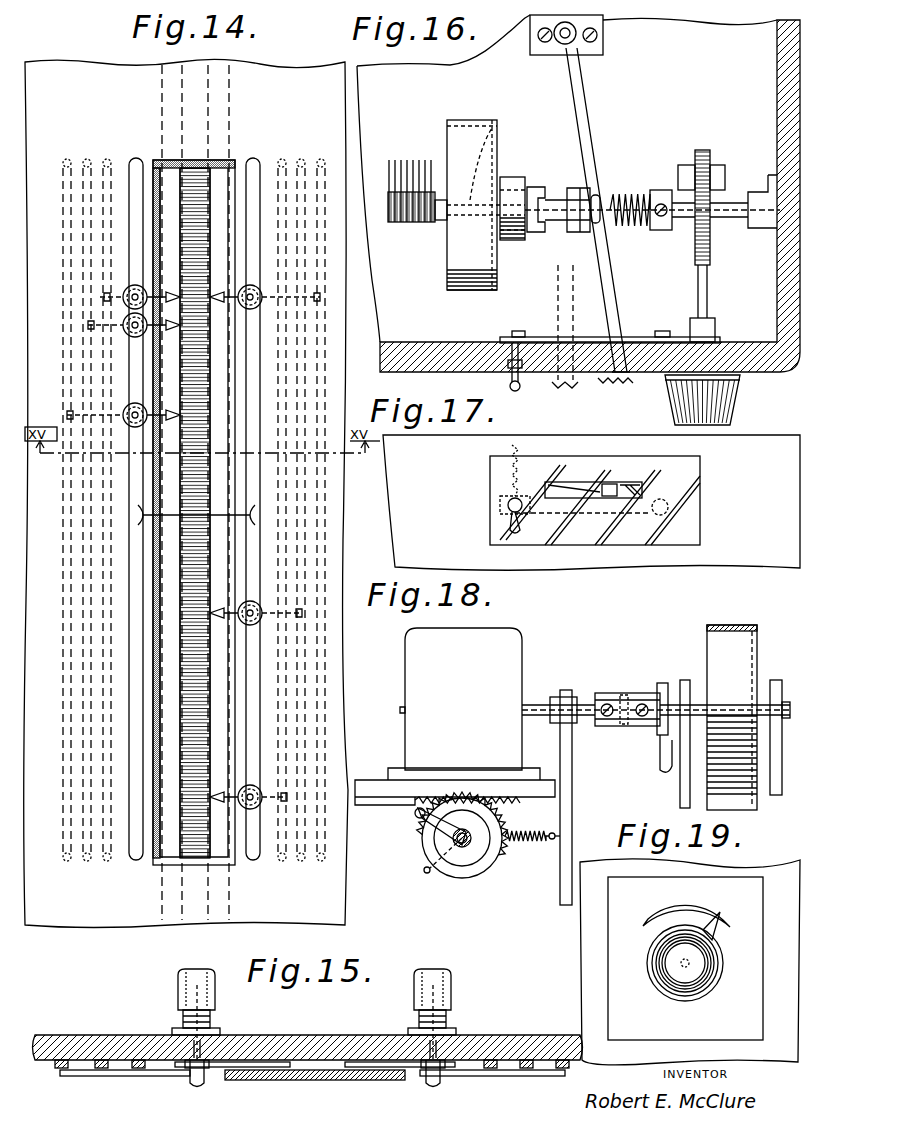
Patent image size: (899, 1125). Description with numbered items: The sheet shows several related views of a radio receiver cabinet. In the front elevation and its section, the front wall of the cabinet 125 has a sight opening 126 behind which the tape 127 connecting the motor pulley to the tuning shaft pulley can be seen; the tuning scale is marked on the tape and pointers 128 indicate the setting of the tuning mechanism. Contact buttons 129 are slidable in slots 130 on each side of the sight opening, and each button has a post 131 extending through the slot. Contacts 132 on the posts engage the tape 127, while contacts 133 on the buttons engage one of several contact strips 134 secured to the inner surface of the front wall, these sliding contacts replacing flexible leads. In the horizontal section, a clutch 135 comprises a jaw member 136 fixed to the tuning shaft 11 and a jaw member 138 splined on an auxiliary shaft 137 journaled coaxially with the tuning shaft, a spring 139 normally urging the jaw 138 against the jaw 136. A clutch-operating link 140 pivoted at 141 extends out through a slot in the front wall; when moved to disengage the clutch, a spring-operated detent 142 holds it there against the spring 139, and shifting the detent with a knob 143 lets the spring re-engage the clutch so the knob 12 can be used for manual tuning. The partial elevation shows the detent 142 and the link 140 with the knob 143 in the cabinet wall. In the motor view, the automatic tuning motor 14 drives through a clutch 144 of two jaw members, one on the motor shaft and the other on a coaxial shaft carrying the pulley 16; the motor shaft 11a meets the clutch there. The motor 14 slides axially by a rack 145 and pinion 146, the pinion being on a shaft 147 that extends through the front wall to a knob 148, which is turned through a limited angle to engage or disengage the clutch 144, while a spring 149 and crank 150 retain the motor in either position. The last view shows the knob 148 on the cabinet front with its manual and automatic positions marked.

In FIG. 16, the tuning shaft 11 is at (497, 153).
In FIG. 18, the drum shaft 11a is at (531, 707).
In FIG. 16, the knob 12 is at (735, 402).
In FIG. 18, the automatic tuning motor 14 is at (422, 660).
In FIG. 18, the pulley 16 is at (738, 650).
In FIG. 14, the front wall of the cabinet 125 is at (65, 62).
In FIG. 15, the front wall of the cabinet 125 is at (90, 1024).
In FIG. 14, the sight opening 126 is at (220, 180).
In FIG. 15, the sight opening 126 is at (365, 1052).
In FIG. 14, the tape 127 is at (170, 195).
In FIG. 15, the tape 127 is at (316, 1079).
In FIG. 14, the pointers 128 is at (248, 518).
In FIG. 14, the contact buttons 129 is at (123, 292).
In FIG. 15, the contact buttons 129 is at (190, 990).
In FIG. 14, the slots 130 is at (135, 166).
In FIG. 15, the posts 131 is at (210, 1048).
In FIG. 14, the contacts 132 is at (163, 286).
In FIG. 15, the contacts 132 is at (272, 1067).
In FIG. 14, the contacts 133 is at (108, 300).
In FIG. 15, the contacts 133 is at (160, 1076).
In FIG. 14, the contact strips 134 is at (85, 534).
In FIG. 15, the contact strips 134 is at (80, 1070).
In FIG. 16, the clutch 135 is at (582, 256).
In FIG. 16, the jaw member 136 is at (513, 188).
In FIG. 16, the auxiliary shaft 137 is at (738, 217).
In FIG. 16, the jaw member 138 is at (578, 193).
In FIG. 16, the spring 139 is at (630, 184).
In FIG. 16, the clutch-operating link 140 is at (610, 273).
In FIG. 17, the clutch-operating link 140 is at (645, 479).
In FIG. 16, the pivot 141 is at (562, 43).
In FIG. 16, the spring-operated detent 142 is at (538, 328).
In FIG. 17, the spring-operated detent 142 is at (582, 495).
In FIG. 16, the knob 143 is at (508, 385).
In FIG. 17, the knob 143 is at (500, 504).
In FIG. 18, the clutch 144 is at (620, 686).
In FIG. 18, the rack 145 is at (432, 796).
In FIG. 18, the pinion 146 is at (495, 810).
In FIG. 18, the shaft 147 is at (462, 850).
In FIG. 19, the knob 148 is at (655, 975).
In FIG. 18, the spring 149 is at (490, 855).
In FIG. 18, the crank 150 is at (430, 831).